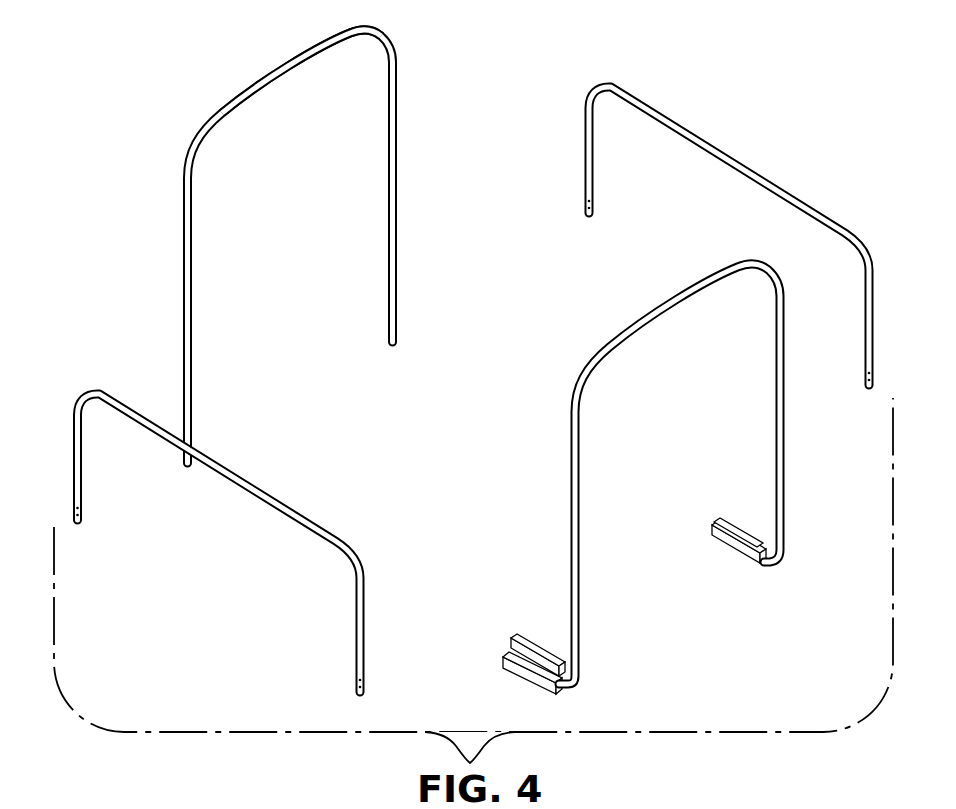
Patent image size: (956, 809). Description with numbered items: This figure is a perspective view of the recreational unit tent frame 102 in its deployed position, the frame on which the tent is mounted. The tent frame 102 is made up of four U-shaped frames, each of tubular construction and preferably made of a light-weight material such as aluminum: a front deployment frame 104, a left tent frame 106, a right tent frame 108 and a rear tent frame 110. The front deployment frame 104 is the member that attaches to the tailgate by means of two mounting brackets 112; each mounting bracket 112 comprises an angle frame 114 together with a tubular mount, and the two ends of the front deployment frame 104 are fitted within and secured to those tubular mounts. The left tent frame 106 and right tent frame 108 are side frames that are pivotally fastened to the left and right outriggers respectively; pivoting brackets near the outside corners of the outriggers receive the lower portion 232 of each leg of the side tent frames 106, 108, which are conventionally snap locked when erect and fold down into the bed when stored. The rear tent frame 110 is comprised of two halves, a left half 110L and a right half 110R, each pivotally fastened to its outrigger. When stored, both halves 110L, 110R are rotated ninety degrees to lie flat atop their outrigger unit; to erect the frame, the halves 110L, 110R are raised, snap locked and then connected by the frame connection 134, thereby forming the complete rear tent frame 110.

The tent frame 102 is at (170, 322).
The front deployment frame 104 is at (578, 494).
The left tent frame 106 is at (271, 490).
The right tent frame 108 is at (705, 133).
The rear tent frame 110 is at (231, 103).
The left half 110L is at (186, 236).
The right half 110R is at (398, 146).
The mounting bracket 112 is at (541, 638).
The angle frame 114 is at (523, 678).
The frame connection 134 is at (291, 52).
The lower portion 232 is at (82, 488).